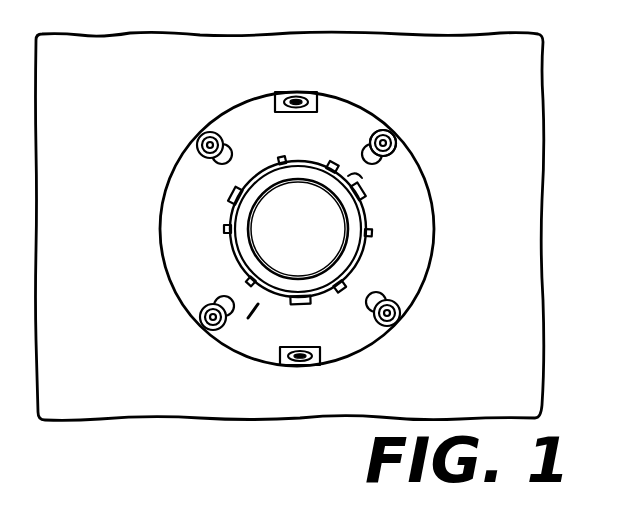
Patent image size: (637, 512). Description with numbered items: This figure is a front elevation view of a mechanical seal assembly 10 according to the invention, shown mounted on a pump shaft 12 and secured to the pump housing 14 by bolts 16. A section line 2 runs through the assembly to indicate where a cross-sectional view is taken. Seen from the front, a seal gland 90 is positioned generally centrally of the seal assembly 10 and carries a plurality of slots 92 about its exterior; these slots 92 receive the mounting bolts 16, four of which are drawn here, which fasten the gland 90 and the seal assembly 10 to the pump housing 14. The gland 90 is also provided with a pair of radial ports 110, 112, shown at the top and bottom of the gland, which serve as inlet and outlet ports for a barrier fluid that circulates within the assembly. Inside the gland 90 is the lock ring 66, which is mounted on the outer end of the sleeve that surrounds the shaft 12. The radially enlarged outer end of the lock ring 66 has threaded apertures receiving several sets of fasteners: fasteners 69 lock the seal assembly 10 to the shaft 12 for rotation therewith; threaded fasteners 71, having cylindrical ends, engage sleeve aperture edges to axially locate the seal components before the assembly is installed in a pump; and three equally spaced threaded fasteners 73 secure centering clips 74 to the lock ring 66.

The section line 2- 2 is at (296, 15).
The mechanical seal assembly 10 is at (247, 322).
The pump shaft 12 is at (302, 261).
The pump housing 14 is at (110, 355).
The bolts 16 is at (396, 133).
The lock ring 66 is at (364, 236).
The fasteners 69 is at (336, 160).
The threaded fasteners 71 is at (285, 155).
The threaded fasteners 73 is at (236, 193).
The centering clips 74 is at (356, 186).
The seal gland 90 is at (432, 282).
The slots 92 is at (387, 130).
The radial port 110 is at (285, 90).
The radial port 112 is at (310, 366).